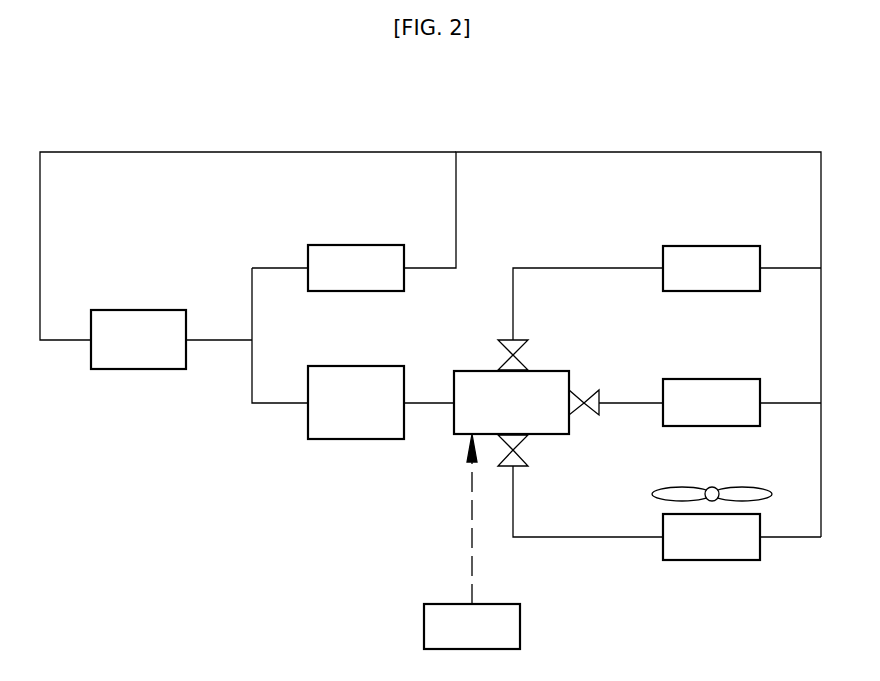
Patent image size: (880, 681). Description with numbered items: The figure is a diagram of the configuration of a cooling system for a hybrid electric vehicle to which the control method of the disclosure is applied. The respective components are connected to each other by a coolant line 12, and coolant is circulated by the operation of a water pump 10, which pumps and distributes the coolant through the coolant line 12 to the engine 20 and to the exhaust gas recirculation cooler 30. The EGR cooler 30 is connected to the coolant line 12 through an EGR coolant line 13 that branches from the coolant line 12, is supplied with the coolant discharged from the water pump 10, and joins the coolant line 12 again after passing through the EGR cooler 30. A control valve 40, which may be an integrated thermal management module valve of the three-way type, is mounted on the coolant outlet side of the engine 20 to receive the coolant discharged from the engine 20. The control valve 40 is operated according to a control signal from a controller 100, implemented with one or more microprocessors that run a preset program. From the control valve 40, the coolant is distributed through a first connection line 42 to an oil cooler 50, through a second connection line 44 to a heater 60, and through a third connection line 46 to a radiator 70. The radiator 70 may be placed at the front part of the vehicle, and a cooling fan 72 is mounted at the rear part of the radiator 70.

The water pump 10 is at (135, 370).
The coolant line 12 is at (208, 151).
The EGR coolant line 13 is at (252, 283).
The engine 20 is at (355, 440).
The exhaust gas recirculation (EGR) cooler 30 is at (355, 245).
The control valve 40 is at (480, 371).
The first connection line 42 is at (578, 268).
The second connection line 44 is at (638, 403).
The third connection line 46 is at (594, 538).
The oil cooler 50 is at (718, 246).
The heater 60 is at (732, 379).
The radiator 70 is at (713, 562).
The cooling fan 72 is at (657, 494).
The controller 100 is at (424, 627).